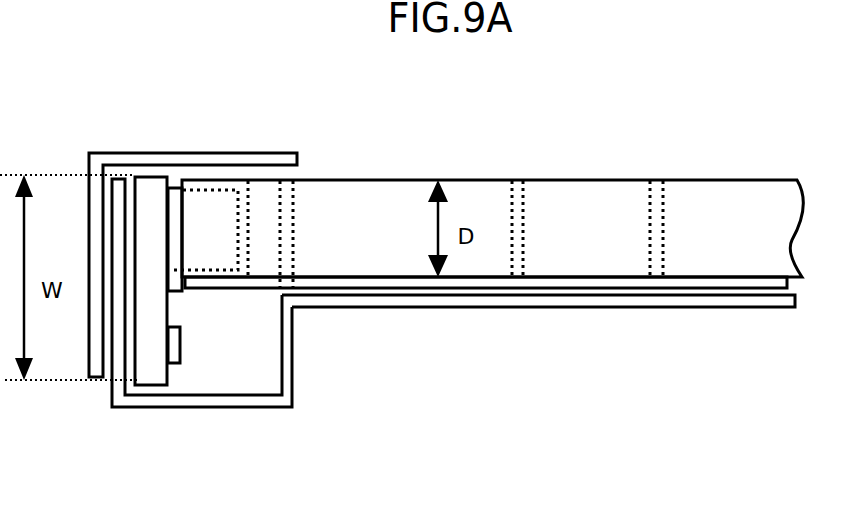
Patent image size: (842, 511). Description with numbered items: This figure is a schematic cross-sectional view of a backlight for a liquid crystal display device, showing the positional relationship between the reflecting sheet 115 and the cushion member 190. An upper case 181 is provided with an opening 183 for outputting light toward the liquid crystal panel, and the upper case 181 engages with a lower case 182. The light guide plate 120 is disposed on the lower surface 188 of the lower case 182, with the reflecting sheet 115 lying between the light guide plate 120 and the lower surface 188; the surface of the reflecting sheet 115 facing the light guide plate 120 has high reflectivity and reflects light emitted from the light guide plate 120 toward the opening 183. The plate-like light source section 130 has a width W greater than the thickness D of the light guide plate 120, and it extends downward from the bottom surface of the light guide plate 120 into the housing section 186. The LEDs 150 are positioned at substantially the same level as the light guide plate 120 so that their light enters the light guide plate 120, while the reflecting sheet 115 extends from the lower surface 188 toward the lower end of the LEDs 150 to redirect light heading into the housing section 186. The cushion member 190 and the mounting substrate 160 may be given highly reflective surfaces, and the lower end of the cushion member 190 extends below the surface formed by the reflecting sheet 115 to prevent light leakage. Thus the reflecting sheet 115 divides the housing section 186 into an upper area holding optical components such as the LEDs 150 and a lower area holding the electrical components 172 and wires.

The plate-like light source section 130 is at (439, 274).
The upper case 181 is at (258, 160).
The housing section 186 is at (237, 358).
The lower surface 188 is at (642, 297).
The lower case 182 is at (386, 286).
The light guide plate 120 is at (403, 207).
The reflecting sheet 115 is at (507, 283).
The opening 183 is at (520, 150).
The mounting substrate 160 is at (142, 197).
The cushion member 190 is at (178, 197).
The LEDs 150 is at (207, 210).
The electrical components 172 is at (177, 363).